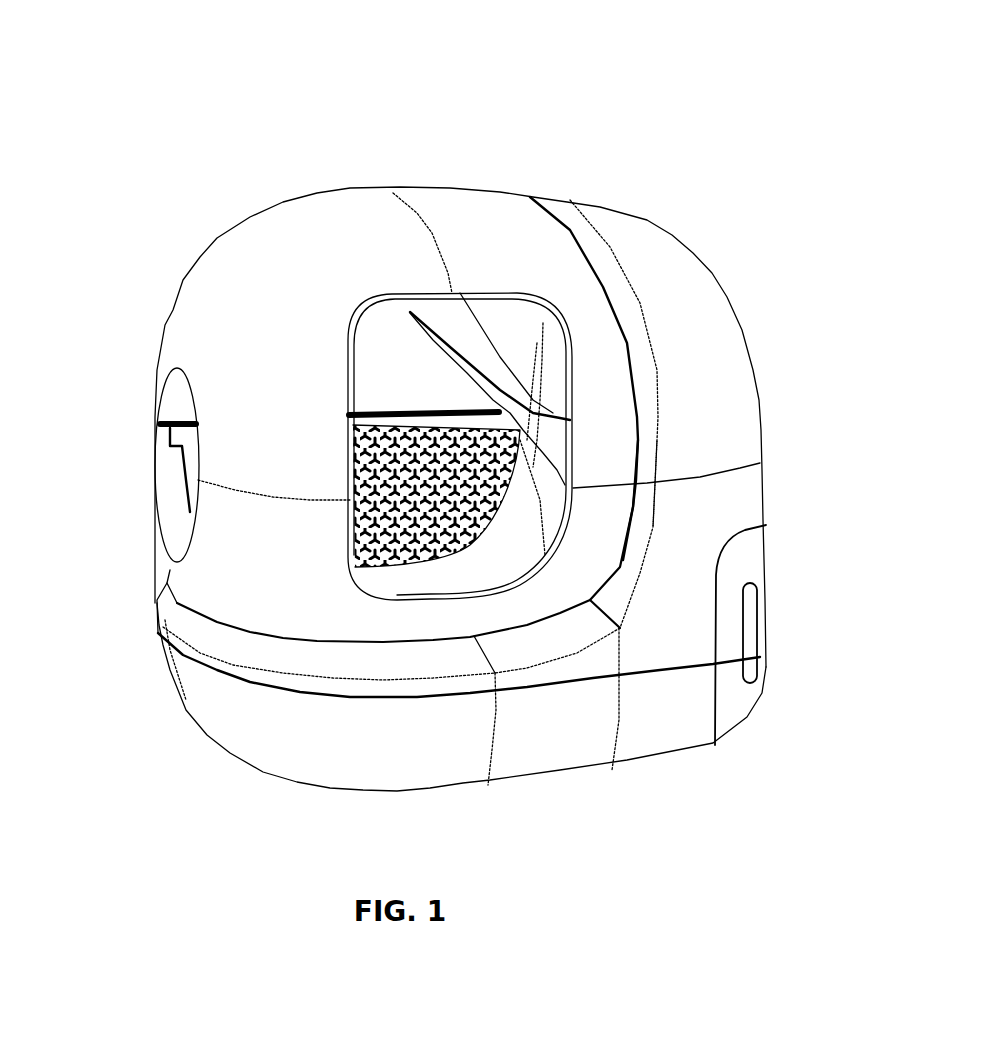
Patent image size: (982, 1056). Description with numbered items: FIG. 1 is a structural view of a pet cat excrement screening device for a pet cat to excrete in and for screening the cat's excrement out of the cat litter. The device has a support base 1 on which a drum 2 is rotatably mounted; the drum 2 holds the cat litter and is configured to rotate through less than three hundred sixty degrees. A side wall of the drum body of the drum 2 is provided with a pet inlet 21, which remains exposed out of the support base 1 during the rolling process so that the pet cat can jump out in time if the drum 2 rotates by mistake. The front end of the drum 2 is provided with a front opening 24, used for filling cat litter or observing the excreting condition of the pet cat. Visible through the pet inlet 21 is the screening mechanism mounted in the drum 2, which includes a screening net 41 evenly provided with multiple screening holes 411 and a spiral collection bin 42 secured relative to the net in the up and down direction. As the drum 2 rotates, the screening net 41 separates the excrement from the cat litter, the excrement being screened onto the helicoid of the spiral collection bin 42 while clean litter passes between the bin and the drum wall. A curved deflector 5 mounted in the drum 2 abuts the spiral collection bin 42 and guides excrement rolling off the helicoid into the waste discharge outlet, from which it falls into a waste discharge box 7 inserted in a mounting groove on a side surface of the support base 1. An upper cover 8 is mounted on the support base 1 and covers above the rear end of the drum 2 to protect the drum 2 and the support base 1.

The support base 1 is at (265, 720).
The drum 2 is at (365, 272).
The pet inlet 21 is at (450, 572).
The front opening 24 is at (195, 470).
The screening net 41 is at (377, 433).
The screening holes 411 is at (348, 480).
The spiral collection bin 42 is at (390, 360).
The deflector 5 is at (513, 410).
The waste discharge box 7 is at (738, 573).
The upper cover 8 is at (660, 318).